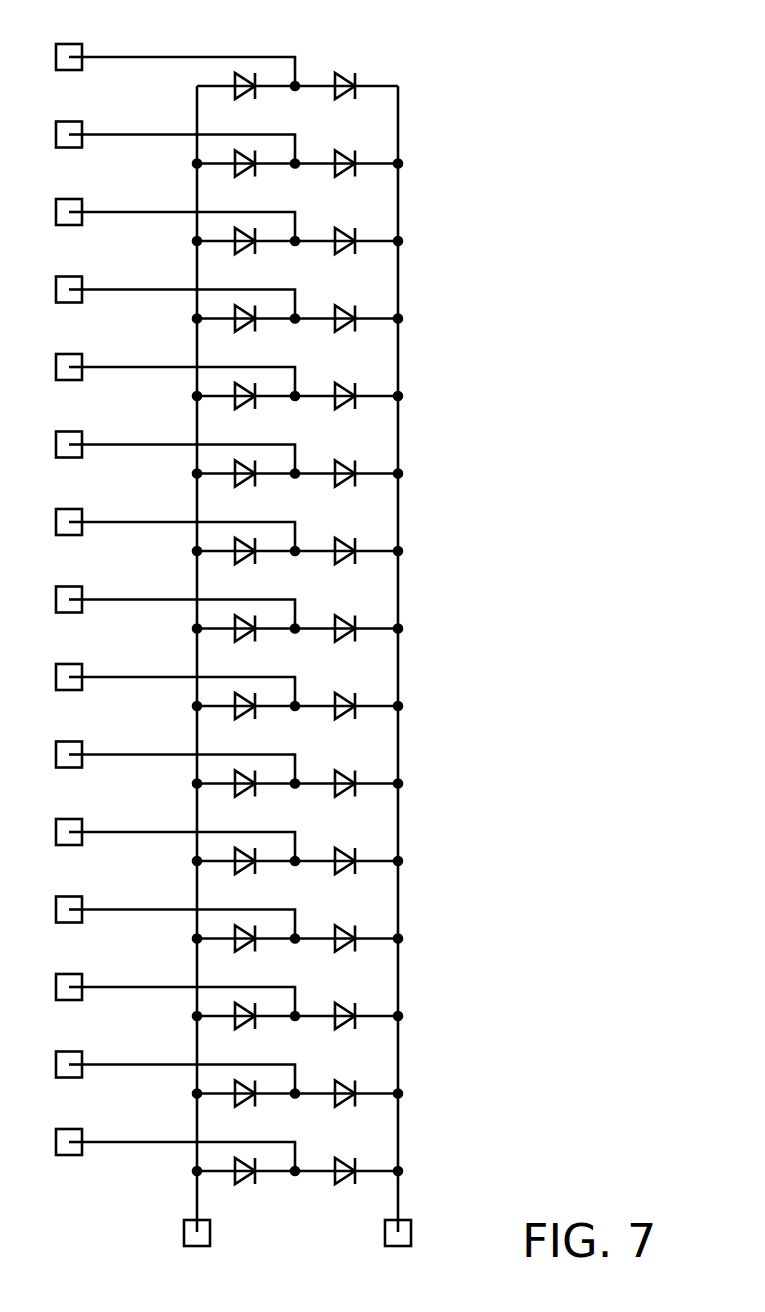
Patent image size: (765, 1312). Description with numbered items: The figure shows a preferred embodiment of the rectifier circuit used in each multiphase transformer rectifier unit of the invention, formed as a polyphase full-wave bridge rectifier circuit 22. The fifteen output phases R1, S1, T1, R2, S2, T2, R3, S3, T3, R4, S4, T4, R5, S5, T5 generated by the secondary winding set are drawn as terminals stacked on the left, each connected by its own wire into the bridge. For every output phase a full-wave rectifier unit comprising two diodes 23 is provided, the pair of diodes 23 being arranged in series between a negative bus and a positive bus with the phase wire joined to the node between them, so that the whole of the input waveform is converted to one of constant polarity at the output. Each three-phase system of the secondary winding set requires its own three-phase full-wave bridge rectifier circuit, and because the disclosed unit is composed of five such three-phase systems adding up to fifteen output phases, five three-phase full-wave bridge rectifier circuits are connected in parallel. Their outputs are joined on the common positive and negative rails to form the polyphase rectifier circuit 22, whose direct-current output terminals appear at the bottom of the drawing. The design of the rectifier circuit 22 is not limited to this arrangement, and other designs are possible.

The polyphase full-wave bridge rectifier circuit 22 is at (303, 642).
The diode 23 is at (244, 73).
The output phase R1 is at (66, 75).
The output phase S1 is at (66, 153).
The output phase T1 is at (65, 230).
The output phase R2 is at (66, 308).
The output phase S2 is at (66, 385).
The output phase T2 is at (65, 463).
The output phase R3 is at (66, 540).
The output phase S3 is at (66, 618).
The output phase T3 is at (65, 695).
The output phase R4 is at (66, 773).
The output phase S4 is at (66, 850).
The output phase T4 is at (65, 928).
The output phase R5 is at (66, 1005).
The output phase S5 is at (66, 1083).
The output phase T5 is at (65, 1160).